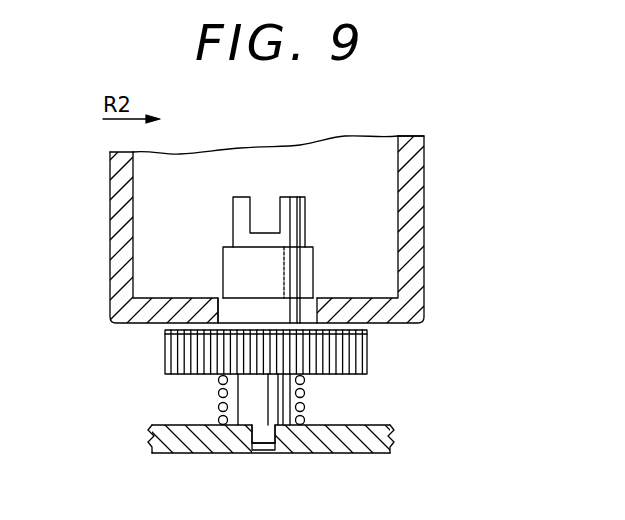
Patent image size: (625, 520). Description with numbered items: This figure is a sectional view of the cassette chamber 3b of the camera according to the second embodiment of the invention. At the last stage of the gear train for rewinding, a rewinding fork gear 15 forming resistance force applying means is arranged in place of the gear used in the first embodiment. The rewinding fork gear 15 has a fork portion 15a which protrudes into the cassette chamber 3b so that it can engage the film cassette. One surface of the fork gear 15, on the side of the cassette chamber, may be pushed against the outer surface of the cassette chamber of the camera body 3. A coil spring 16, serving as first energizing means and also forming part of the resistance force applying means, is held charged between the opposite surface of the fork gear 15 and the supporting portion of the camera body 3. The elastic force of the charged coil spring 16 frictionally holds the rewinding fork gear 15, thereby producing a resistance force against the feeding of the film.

The camera body 3 is at (128, 324).
The cassette chamber 3b is at (135, 266).
The rewinding fork gear 15 is at (355, 352).
The fork portion 15a is at (305, 222).
The coil spring 16 is at (305, 410).